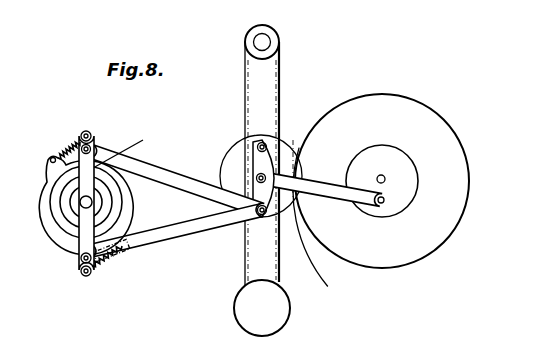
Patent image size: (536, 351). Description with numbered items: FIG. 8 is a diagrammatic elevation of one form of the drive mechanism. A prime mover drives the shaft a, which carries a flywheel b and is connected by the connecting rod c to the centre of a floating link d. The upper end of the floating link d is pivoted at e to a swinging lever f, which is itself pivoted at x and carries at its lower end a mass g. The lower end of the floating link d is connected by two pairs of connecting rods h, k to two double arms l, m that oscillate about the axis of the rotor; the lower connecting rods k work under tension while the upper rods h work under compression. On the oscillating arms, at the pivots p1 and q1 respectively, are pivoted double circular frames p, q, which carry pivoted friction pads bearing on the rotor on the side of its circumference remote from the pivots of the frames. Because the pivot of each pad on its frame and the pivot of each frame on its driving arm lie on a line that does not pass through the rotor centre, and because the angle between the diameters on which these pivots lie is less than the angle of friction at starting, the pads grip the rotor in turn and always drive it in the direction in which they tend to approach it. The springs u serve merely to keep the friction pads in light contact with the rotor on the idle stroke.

The shaft a is at (386, 176).
The flywheel b is at (437, 177).
The connecting rod c is at (313, 226).
The floating link d is at (236, 168).
The pivot e is at (258, 146).
The swinging lever f is at (260, 262).
The mass g is at (258, 306).
The upper connecting rods h is at (175, 175).
The lower connecting rods k is at (178, 230).
The double arm l is at (83, 231).
The double arm m is at (127, 148).
The double circular frame p is at (115, 237).
The pivot p1 is at (83, 262).
The double circular frame q is at (58, 178).
The pivot q1 is at (92, 145).
The springs u is at (67, 145).
The pivot x is at (267, 42).